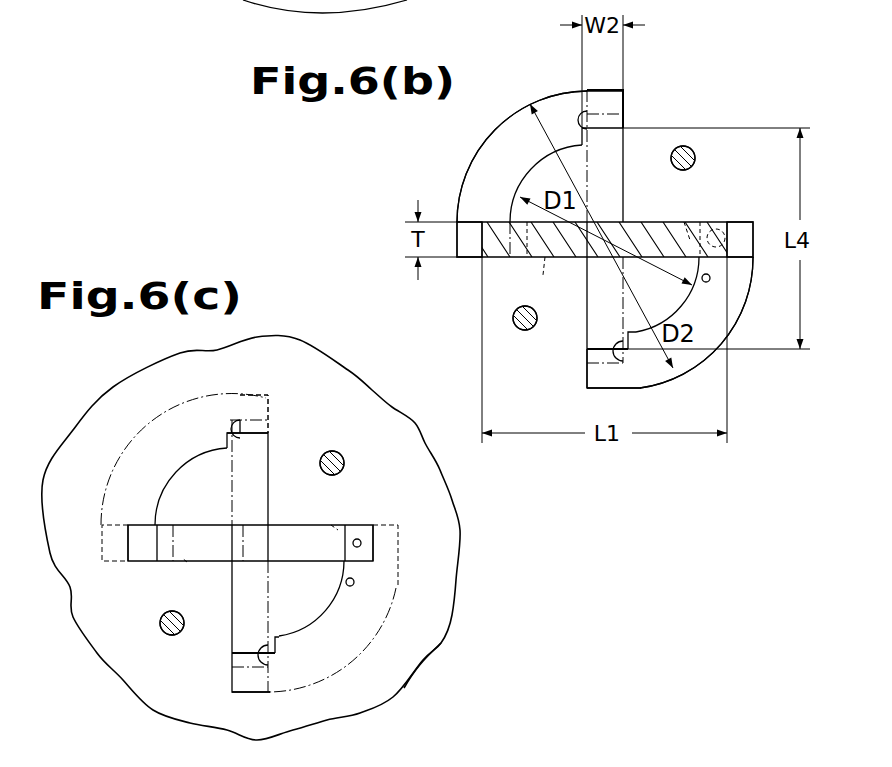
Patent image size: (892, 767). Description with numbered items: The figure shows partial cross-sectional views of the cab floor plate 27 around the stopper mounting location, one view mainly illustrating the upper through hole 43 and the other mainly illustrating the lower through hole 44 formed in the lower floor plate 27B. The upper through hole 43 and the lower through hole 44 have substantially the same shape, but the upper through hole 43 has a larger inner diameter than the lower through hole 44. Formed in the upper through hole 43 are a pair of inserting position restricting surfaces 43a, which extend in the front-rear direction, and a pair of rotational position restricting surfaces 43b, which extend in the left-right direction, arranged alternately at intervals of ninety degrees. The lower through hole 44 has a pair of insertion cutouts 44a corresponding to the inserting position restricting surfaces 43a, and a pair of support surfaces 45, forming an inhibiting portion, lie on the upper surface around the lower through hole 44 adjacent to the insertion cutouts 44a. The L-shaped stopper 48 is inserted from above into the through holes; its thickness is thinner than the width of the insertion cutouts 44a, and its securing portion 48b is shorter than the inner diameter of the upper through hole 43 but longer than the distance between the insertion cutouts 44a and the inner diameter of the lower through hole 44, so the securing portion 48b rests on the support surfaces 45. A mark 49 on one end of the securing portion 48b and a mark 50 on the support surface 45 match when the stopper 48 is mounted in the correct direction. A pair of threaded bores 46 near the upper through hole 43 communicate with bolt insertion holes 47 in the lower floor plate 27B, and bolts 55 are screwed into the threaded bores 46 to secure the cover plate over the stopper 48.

In FIG. 6C, the floor plate 27 is at (463, 520).
In FIG. 6C, the lower floor plate 27B is at (425, 653).
In FIG. 6B, the upper through hole 43 is at (552, 104).
In FIG. 6C, the upper through hole 43 is at (193, 410).
In FIG. 6B, the inserting position restricting surfaces 43a is at (620, 151).
In FIG. 6C, the inserting position restricting surfaces 43a is at (269, 453).
In FIG. 6B, the rotational position restricting surfaces 43b is at (545, 258).
In FIG. 6C, the rotational position restricting surfaces 43b is at (331, 525).
In FIG. 6B, the lower through hole 44 is at (548, 166).
In FIG. 6C, the lower through hole 44 is at (192, 470).
In FIG. 6B, the insertion cutouts 44a is at (584, 113).
In FIG. 6C, the insertion cutouts 44a is at (240, 432).
In FIG. 6B, the support surfaces 45 is at (500, 171).
In FIG. 6C, the support surfaces 45 is at (120, 476).
In FIG. 6B, the threaded bores 46 is at (689, 147).
In FIG. 6C, the bolt insertion holes 47 is at (333, 451).
In FIG. 6B, the stopper 48 is at (626, 212).
In FIG. 6C, the stopper 48 is at (269, 508).
In FIG. 6B, the securing portion 48b is at (490, 262).
In FIG. 6C, the securing portion 48b is at (138, 560).
In FIG. 6B, the mark 49 is at (733, 214).
In FIG. 6C, the mark 49 is at (361, 542).
In FIG. 6B, the mark 50 is at (710, 278).
In FIG. 6C, the mark 50 is at (355, 582).
In FIG. 6B, the bolts 55 is at (696, 158).
In FIG. 6C, the bolts 55 is at (343, 457).